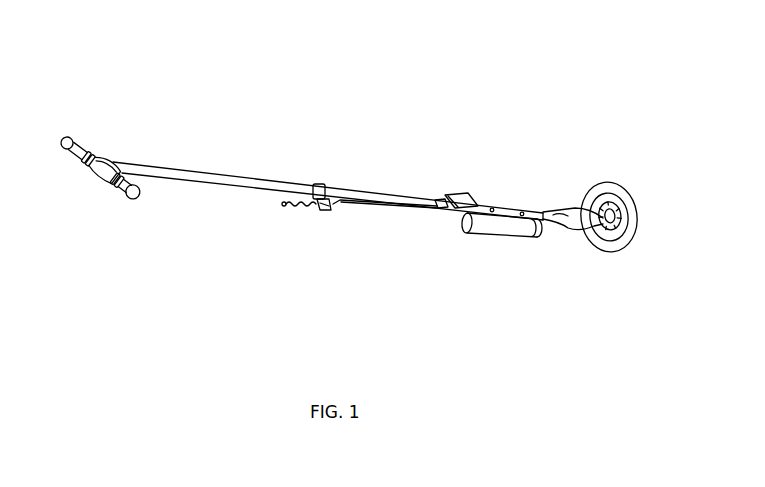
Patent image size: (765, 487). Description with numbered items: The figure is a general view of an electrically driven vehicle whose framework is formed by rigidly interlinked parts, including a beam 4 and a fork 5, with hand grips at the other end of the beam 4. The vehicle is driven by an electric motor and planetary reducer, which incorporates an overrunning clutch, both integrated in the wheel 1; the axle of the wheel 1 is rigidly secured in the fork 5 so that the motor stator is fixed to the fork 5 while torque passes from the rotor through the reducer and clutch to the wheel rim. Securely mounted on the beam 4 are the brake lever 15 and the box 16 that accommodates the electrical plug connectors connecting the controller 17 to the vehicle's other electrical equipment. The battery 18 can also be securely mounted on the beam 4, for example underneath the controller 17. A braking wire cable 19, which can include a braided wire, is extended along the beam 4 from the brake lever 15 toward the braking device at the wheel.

The wheel 1 is at (592, 188).
The beam 4 is at (168, 168).
The fork 5 is at (562, 226).
The brake lever 15 is at (315, 207).
The box 16 is at (436, 200).
The controller 17 is at (458, 194).
The battery 18 is at (493, 224).
The braking wire cable 19 is at (340, 200).